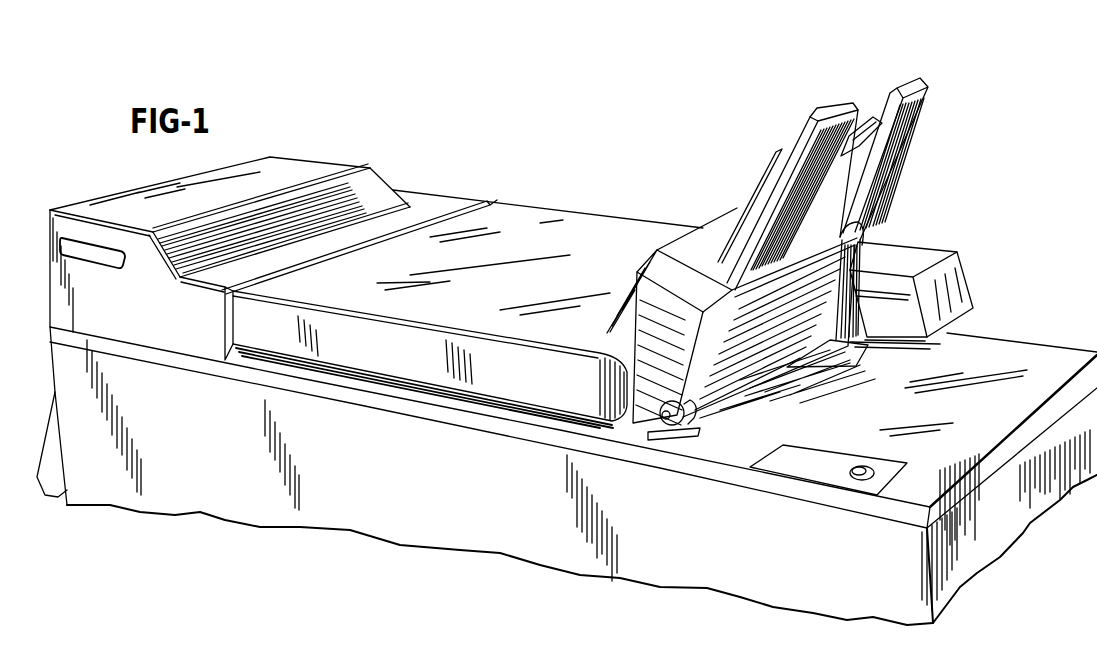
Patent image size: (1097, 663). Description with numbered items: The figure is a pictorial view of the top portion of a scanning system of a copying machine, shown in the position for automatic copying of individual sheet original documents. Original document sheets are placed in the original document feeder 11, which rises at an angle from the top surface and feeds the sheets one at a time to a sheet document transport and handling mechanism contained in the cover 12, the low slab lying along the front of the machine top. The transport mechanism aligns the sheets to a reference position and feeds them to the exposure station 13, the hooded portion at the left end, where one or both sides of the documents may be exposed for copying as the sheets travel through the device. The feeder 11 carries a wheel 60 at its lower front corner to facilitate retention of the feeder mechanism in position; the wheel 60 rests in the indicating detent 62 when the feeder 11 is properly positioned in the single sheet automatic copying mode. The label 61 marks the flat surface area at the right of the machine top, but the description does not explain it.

The original document feeder 11 is at (819, 102).
The cover 12 is at (561, 192).
The exposure station 13 is at (334, 160).
The wheel 60 is at (661, 432).
The work surface 61 is at (912, 413).
The indicating detent 62 is at (697, 431).